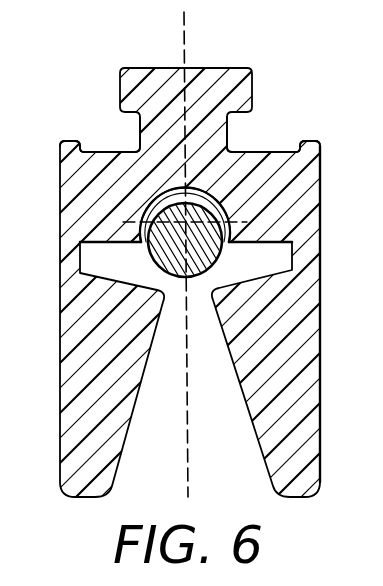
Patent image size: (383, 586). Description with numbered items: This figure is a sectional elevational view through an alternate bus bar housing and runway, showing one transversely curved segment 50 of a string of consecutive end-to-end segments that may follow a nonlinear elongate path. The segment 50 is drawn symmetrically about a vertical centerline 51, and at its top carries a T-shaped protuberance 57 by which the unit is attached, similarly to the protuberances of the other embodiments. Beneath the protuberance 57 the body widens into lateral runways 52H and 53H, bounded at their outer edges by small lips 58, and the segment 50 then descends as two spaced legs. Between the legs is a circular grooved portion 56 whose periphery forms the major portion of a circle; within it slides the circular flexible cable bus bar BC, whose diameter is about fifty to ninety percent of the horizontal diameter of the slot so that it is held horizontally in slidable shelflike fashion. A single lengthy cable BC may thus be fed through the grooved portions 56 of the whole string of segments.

The segment 50 is at (62, 392).
The center axis 51 is at (188, 436).
The left shoulder hook 52H is at (83, 152).
The right shoulder hook 53H is at (297, 152).
The circular grooved portion 56 is at (234, 226).
The T-shaped protuberance 57 is at (198, 68).
The retaining lips 58 is at (66, 142).
The circular flexible cable bus bar BC is at (176, 277).